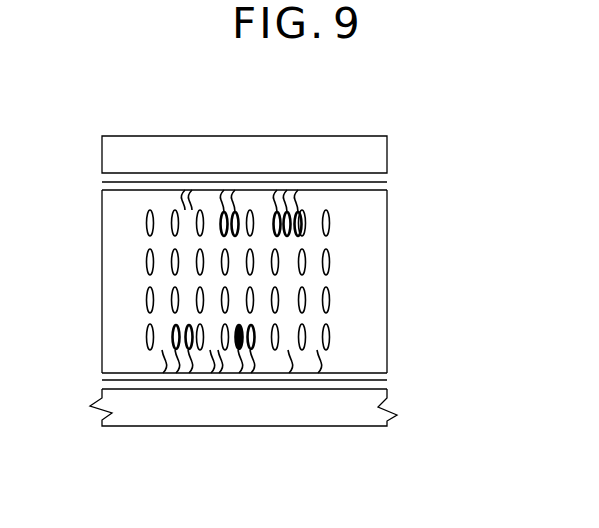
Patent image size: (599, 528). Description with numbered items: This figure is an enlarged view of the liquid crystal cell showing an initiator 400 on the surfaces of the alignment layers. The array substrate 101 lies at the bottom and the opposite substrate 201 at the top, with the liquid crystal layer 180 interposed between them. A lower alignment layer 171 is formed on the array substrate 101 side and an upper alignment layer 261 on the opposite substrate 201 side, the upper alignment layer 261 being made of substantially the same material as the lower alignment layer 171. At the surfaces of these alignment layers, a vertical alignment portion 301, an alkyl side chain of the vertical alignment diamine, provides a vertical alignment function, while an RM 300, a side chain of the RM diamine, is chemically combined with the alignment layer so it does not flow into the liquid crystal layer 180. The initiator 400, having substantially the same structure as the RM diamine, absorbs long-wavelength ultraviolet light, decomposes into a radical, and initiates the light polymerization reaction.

The opposite substrate 201 is at (382, 152).
The upper alignment layer 261 is at (383, 186).
The RM 300 is at (313, 223).
The liquid crystal layer 180 is at (382, 312).
The vertical alignment portion 301 is at (318, 353).
The lower alignment layer 171 is at (385, 377).
The array substrate 101 is at (388, 400).
The initiator 400 is at (243, 356).